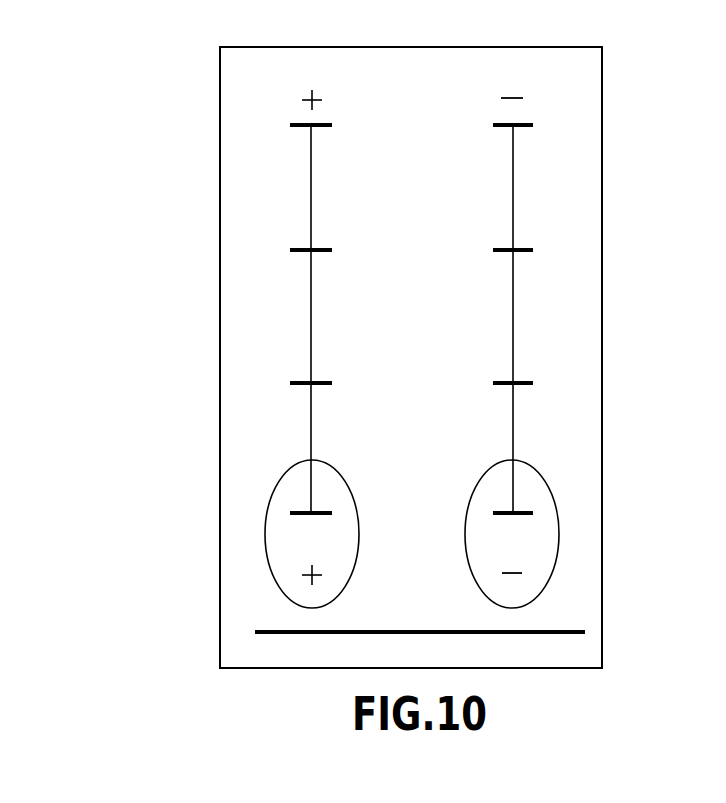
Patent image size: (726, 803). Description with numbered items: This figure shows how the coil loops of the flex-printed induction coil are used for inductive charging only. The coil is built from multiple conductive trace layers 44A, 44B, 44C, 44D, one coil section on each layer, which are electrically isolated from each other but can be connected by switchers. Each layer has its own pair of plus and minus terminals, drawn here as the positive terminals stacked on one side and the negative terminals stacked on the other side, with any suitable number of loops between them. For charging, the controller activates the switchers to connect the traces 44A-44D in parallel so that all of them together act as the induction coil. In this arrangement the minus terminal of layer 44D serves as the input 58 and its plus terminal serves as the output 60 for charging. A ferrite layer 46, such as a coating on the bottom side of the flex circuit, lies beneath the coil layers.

The coil layer 44A is at (628, 115).
The coil layer 44B is at (628, 222).
The coil layer 44C is at (628, 355).
The coil layer 44D is at (628, 488).
The output 60 is at (265, 550).
The input 58 is at (555, 565).
The ferrite layer 46 is at (238, 642).